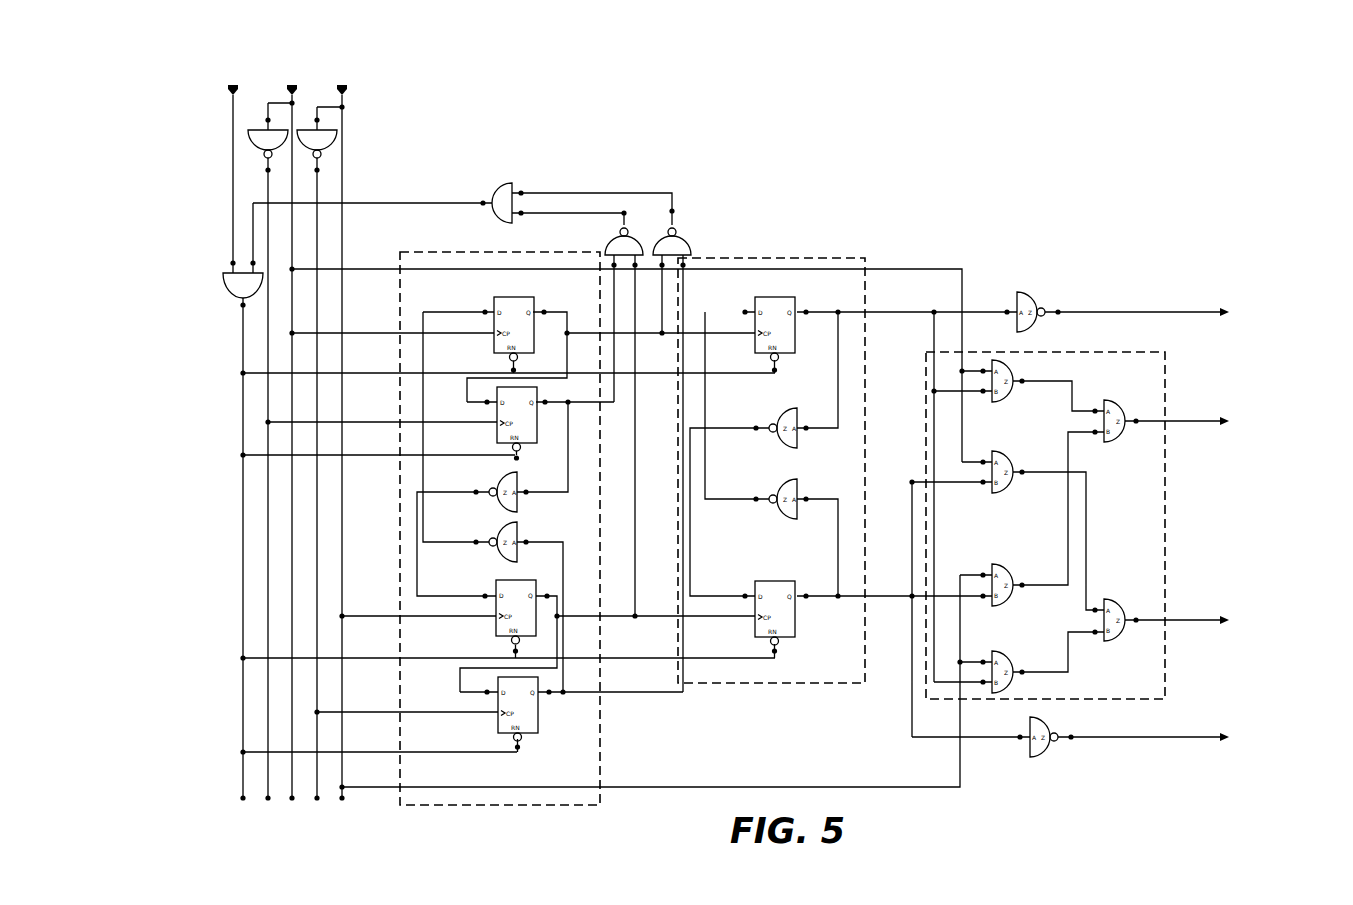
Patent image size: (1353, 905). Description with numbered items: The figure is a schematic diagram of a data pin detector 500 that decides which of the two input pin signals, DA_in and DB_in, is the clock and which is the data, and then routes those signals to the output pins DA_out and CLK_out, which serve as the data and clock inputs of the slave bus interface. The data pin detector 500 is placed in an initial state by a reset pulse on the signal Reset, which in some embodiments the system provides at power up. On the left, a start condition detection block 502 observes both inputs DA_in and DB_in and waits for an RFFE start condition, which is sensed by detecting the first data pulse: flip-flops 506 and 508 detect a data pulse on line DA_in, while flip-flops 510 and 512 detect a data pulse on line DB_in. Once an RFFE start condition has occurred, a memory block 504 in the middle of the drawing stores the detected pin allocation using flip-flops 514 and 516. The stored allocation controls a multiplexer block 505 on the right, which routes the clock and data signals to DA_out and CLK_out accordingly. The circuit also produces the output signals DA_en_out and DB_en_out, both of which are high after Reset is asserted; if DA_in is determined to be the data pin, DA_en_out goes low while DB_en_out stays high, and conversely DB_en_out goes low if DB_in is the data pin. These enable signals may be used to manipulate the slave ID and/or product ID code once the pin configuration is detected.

The data pin detector 500 is at (180, 93).
The start condition detection block 502 is at (440, 250).
The memory block 504 is at (798, 258).
The multiplexer block 505 is at (1145, 351).
The flip-flop 506 is at (494, 301).
The flip-flop 508 is at (536, 443).
The flip-flop 510 is at (496, 585).
The flip-flop 512 is at (538, 724).
The flip-flop 514 is at (756, 299).
The flip-flop 516 is at (755, 584).